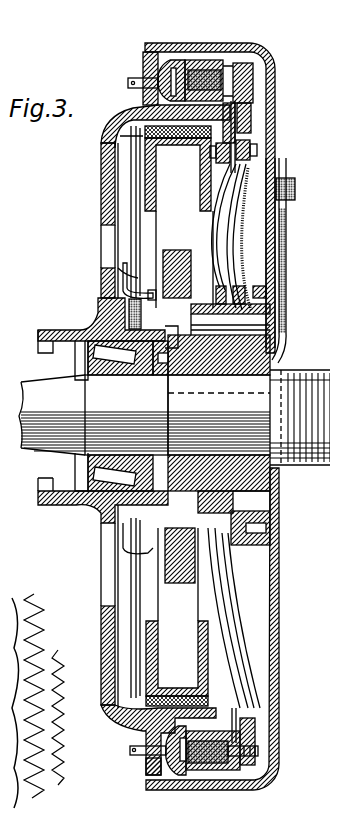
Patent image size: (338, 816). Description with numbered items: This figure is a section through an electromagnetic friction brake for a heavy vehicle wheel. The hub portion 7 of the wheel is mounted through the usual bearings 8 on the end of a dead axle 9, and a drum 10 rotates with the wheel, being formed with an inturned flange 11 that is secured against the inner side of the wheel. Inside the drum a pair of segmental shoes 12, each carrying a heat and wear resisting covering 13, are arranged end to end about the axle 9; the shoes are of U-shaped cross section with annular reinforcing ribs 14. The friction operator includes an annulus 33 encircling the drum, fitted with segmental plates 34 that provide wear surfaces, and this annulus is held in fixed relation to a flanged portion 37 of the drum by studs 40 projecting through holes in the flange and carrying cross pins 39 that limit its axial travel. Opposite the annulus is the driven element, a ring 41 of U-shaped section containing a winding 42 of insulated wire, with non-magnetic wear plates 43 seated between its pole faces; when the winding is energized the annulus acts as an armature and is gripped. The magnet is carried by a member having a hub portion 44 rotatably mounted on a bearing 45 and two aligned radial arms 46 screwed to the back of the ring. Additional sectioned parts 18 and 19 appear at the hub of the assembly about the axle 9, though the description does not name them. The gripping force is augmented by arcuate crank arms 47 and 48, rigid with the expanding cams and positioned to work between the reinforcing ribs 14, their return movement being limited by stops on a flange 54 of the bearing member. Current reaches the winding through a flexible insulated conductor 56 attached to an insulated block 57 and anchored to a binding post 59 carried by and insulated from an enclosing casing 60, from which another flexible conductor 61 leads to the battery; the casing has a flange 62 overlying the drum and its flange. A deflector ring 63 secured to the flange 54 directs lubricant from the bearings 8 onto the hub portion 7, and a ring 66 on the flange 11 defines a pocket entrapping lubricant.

The hub portion 7 is at (77, 318).
The bearings 8 is at (105, 355).
The axle 9 is at (93, 398).
The drum 10 is at (207, 98).
The inturned flange 11 is at (95, 195).
The shoes 12 is at (140, 130).
The covering 13 is at (148, 112).
The reinforcing ribs 14 is at (148, 185).
The hub member 18 is at (268, 352).
The hub 19 is at (219, 415).
The annulus 33 is at (136, 58).
The segmental plates 34 is at (162, 58).
The flanged portion 37 is at (140, 724).
The cross pins 39 is at (127, 748).
The studs 40 is at (140, 755).
The ring 41 is at (205, 765).
The winding 42 is at (240, 758).
The wear plates 43 is at (205, 54).
The hub portion 44 is at (250, 283).
The bearing 45 is at (205, 322).
The radial arms 46 is at (207, 226).
The crank arm 47 is at (165, 560).
The crank arm 48 is at (160, 255).
The flange 54 is at (140, 292).
The flexible insulated conductor 56 is at (240, 170).
The insulated block 57 is at (230, 125).
The binding post 59 is at (300, 417).
The casing 60 is at (268, 247).
The flexible conductor 61 is at (280, 295).
The flange 62 is at (193, 38).
The deflector ring 63 is at (93, 270).
The ring 66 is at (110, 660).